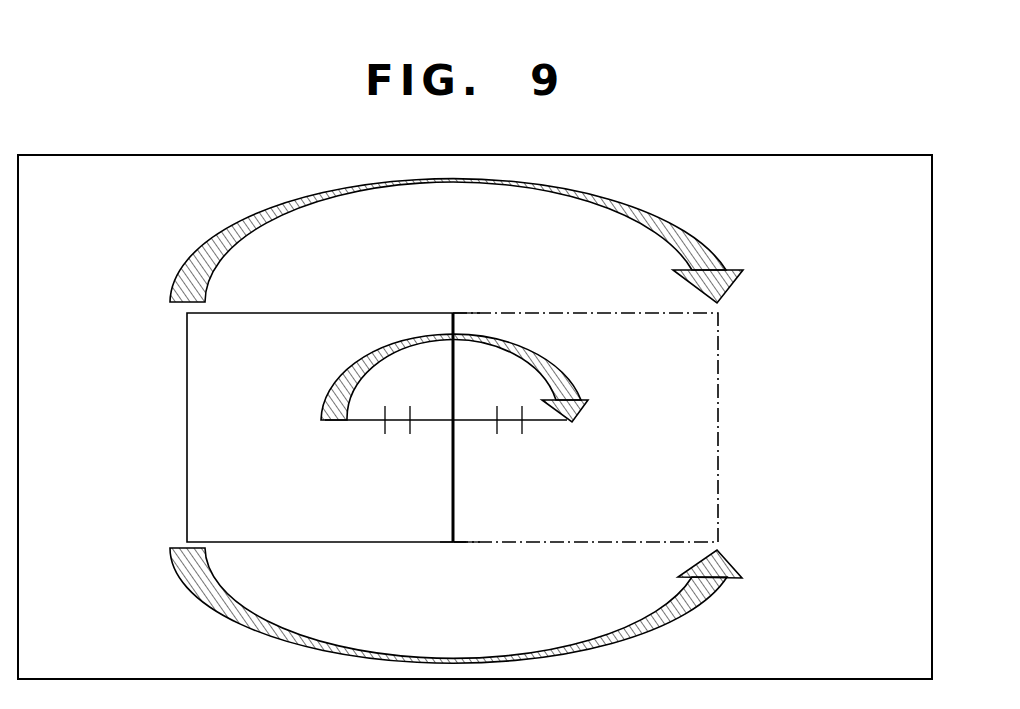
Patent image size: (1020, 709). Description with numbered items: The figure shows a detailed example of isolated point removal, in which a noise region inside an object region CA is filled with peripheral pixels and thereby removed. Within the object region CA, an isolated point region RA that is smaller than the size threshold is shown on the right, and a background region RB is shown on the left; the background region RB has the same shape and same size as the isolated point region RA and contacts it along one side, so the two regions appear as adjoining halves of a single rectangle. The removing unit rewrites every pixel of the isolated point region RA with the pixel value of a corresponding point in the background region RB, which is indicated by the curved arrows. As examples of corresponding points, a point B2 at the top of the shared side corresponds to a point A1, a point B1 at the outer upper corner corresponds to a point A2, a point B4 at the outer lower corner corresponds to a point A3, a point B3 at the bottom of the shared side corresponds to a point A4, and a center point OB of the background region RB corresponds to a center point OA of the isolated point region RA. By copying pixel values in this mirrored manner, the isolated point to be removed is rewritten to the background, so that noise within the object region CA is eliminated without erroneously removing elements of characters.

The object region CA is at (75, 155).
The background region RB is at (293, 313).
The isolated point region RA is at (720, 403).
The point B1 is at (430, 243).
The point B2 is at (433, 412).
The point B3 is at (440, 557).
The point B4 is at (431, 605).
The point A1 is at (476, 298).
The point A2 is at (723, 289).
The point A3 is at (725, 562).
The point A4 is at (476, 557).
The point OB is at (444, 393).
The point OA is at (467, 426).